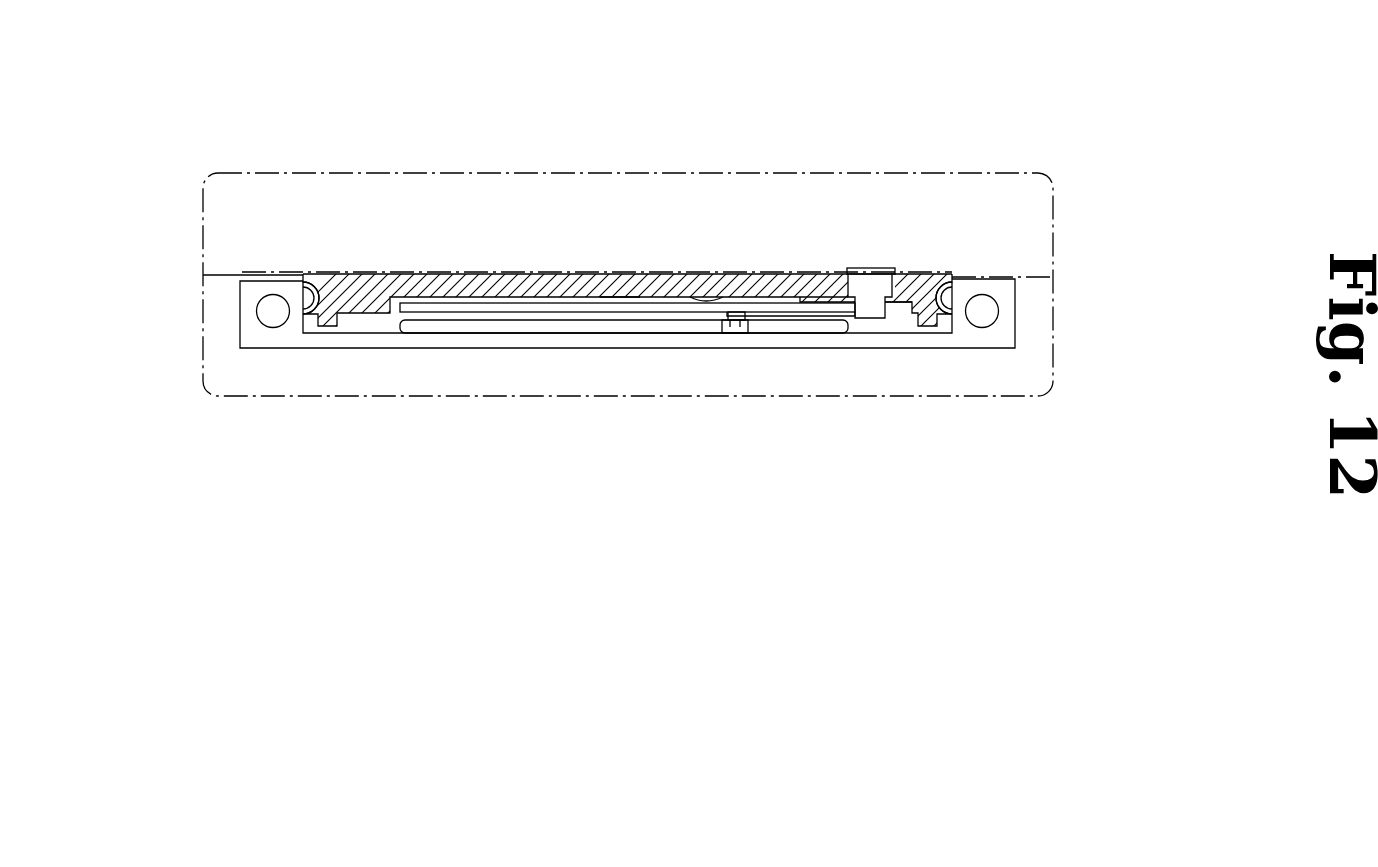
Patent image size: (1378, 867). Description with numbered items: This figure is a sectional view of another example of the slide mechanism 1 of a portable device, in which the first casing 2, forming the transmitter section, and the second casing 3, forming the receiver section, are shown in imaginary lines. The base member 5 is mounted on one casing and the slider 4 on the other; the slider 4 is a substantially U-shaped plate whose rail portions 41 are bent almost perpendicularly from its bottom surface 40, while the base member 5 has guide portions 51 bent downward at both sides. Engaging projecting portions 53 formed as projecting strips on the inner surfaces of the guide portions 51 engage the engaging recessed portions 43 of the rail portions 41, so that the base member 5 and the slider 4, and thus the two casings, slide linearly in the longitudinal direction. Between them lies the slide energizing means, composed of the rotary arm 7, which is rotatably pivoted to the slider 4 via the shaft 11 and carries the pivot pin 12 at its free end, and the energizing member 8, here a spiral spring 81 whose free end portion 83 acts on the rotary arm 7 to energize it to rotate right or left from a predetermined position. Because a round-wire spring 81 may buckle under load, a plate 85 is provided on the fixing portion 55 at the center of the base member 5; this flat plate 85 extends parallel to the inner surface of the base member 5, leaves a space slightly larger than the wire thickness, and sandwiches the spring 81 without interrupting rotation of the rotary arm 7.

The slide mechanism 1 is at (172, 398).
The first casing 2 is at (182, 372).
The second casing 3 is at (1012, 172).
The slider 4 is at (387, 274).
The base member 5 is at (387, 349).
The rotary arm 7 is at (900, 307).
The energizing member 8 is at (627, 295).
The shaft 11 is at (847, 268).
The pivot pin 12 is at (738, 335).
The bottom surface 40 is at (735, 274).
The rail portion 41 is at (313, 312).
The engaging recessed portion 43 is at (350, 273).
The guide portion 51 is at (252, 303).
The engaging projecting portion 53 is at (306, 300).
The fixing portion 55 is at (613, 297).
The spring 81 is at (483, 325).
The free end portion 83 is at (712, 334).
The plate 85 is at (567, 310).